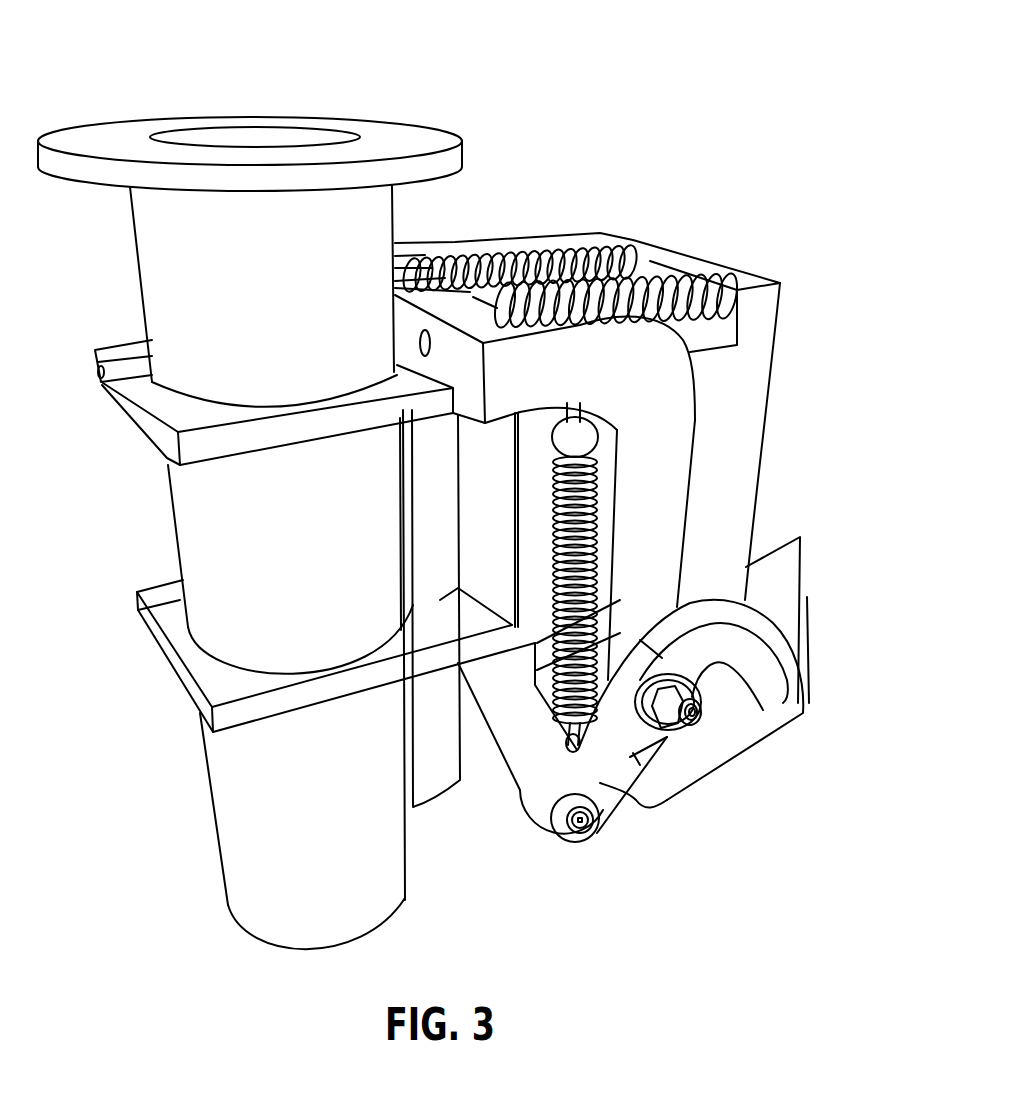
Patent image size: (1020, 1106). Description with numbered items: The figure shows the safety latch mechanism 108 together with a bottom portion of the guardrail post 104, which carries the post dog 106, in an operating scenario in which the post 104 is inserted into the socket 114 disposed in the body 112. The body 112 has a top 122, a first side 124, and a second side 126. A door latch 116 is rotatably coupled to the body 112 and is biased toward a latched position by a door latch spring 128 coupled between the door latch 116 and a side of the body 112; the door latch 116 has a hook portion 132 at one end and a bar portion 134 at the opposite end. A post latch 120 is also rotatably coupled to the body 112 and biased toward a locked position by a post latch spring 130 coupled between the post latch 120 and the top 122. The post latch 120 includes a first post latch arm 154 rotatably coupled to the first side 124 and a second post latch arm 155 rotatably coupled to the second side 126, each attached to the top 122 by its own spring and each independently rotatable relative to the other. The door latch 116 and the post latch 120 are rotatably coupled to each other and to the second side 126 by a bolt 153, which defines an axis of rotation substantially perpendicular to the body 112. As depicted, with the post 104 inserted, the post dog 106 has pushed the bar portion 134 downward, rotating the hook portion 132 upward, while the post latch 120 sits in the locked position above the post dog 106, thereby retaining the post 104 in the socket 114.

The post 104 is at (178, 309).
The post dog 106 is at (424, 750).
The safety latch mechanism 108 is at (672, 80).
The body 112 is at (705, 487).
The socket 114 is at (172, 421).
The door latch 116 is at (612, 752).
The post latch 120 is at (645, 545).
The top 122 is at (697, 340).
The first side 124 is at (519, 255).
The second side 126 is at (707, 358).
The door latch spring 128 is at (605, 610).
The post latch spring 130 is at (625, 295).
The hook portion 132 is at (780, 688).
The bar portion 134 is at (520, 762).
The bolt 153 is at (692, 720).
The first post latch arm 154 is at (440, 258).
The second post latch arm 155 is at (663, 401).